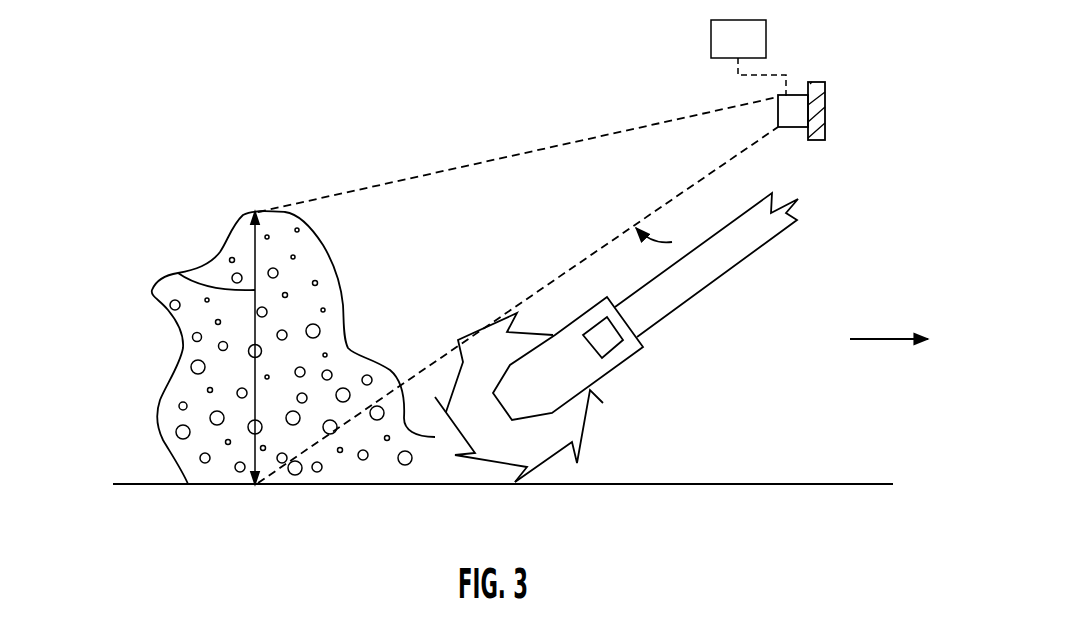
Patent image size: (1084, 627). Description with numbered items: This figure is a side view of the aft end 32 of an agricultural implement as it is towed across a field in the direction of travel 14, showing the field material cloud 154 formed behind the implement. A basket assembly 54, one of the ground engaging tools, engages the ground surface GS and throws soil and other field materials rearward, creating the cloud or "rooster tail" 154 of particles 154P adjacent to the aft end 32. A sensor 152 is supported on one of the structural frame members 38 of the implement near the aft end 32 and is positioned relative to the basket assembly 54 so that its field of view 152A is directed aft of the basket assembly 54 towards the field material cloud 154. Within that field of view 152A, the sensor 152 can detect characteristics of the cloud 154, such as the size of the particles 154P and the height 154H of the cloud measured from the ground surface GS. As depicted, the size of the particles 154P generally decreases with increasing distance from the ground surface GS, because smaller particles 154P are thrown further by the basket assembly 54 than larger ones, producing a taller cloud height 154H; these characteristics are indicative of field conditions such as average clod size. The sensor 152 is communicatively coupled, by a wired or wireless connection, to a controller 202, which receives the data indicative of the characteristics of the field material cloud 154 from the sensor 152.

The direction of travel 14 is at (889, 339).
The aft end 32 is at (420, 393).
The structural frame member 38 is at (827, 116).
The basket assembly 54 is at (582, 445).
The sensor 152 is at (790, 93).
The field of view 152A is at (580, 138).
The field material cloud 154 is at (178, 357).
The height of the field material cloud 154H is at (200, 286).
The particles 154P is at (176, 432).
The controller 202 is at (748, 58).
The ground surface GS is at (813, 484).